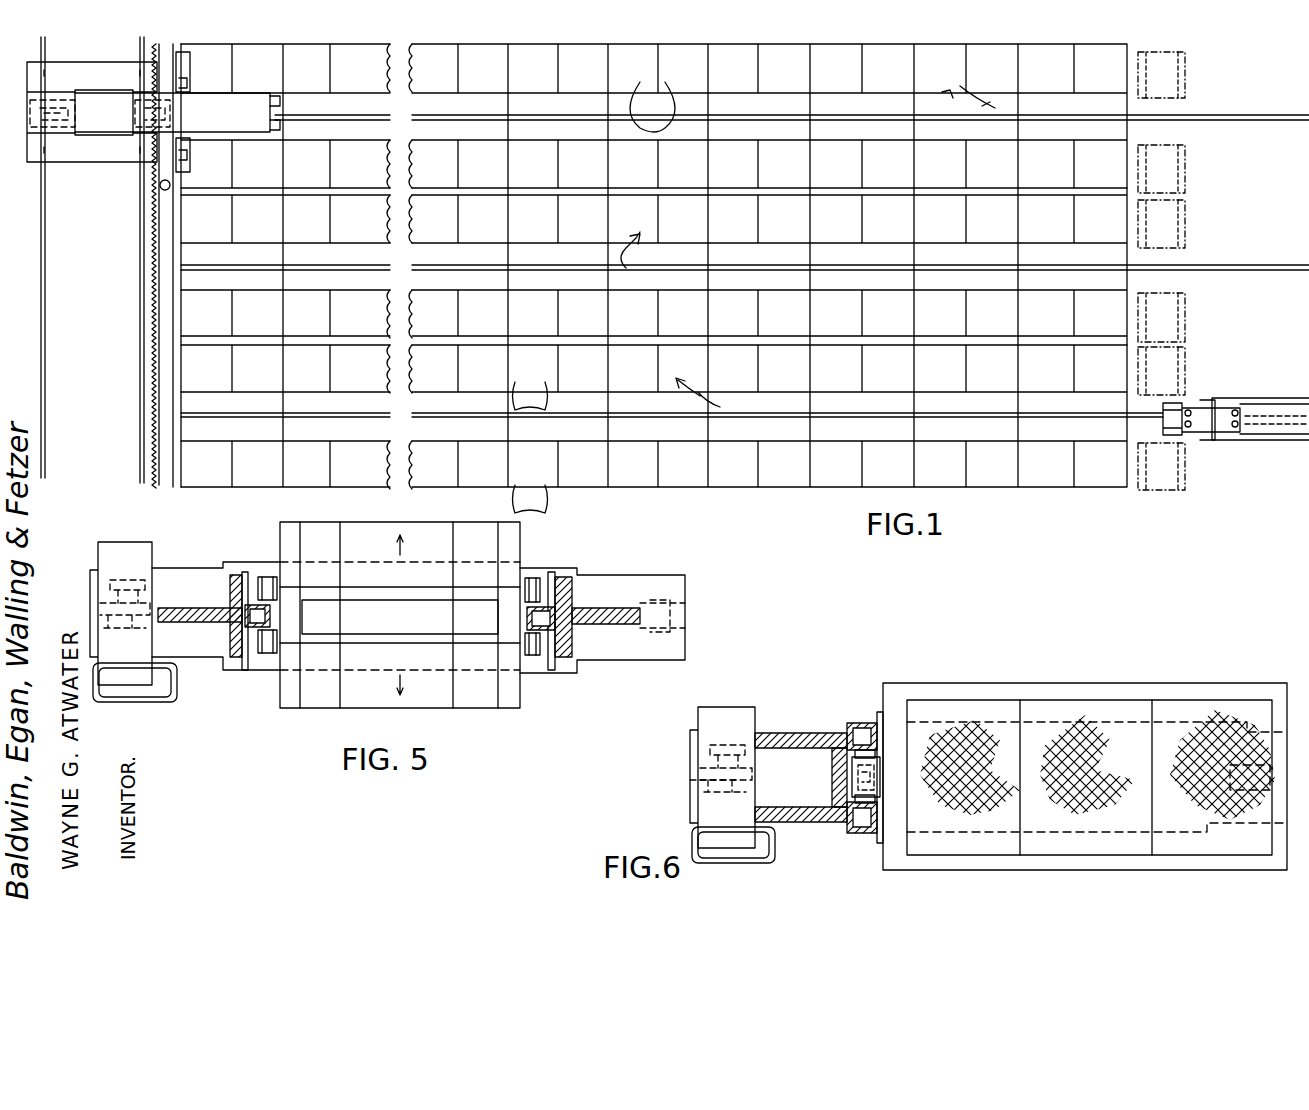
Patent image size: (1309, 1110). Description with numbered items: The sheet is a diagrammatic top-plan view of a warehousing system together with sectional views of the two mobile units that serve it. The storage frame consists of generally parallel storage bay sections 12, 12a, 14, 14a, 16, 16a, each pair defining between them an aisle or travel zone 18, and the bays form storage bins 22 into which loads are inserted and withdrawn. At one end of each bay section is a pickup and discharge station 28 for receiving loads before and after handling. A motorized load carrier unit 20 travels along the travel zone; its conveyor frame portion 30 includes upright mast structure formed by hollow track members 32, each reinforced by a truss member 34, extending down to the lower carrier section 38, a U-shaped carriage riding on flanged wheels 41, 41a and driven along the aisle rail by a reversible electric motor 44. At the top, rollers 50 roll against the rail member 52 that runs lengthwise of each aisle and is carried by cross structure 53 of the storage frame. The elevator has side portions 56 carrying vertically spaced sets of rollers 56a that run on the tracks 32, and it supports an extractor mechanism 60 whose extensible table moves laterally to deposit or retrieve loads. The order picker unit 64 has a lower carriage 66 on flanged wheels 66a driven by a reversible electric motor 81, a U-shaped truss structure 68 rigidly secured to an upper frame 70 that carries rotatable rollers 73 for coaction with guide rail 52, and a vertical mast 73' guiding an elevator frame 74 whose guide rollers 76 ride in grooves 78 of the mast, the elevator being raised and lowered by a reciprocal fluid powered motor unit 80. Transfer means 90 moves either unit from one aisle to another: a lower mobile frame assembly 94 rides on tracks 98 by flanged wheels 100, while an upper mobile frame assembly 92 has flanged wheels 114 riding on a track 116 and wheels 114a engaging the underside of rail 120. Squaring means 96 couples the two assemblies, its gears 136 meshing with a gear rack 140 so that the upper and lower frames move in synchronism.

In FIG. 1, the storage bay section 12 is at (694, 491).
In FIG. 1, the storage bay section 12a is at (718, 397).
In FIG. 1, the storage bay section 14 is at (717, 292).
In FIG. 1, the storage bay section 14a is at (643, 250).
In FIG. 1, the storage bay section 16 is at (979, 150).
In FIG. 1, the storage bay section 16a is at (1001, 101).
In FIG. 1, the aisle or travel zone 18 is at (1105, 128).
In FIG. 1, the load carrier unit 20 is at (105, 135).
In FIG. 5, the load carrier unit 20 is at (525, 700).
In FIG. 1, the storage bin 22 is at (594, 300).
In FIG. 1, the pickup and discharge station 28 is at (1185, 82).
In FIG. 5, the conveyor frame portion 30 is at (629, 582).
In FIG. 5, the track member 32 is at (246, 672).
In FIG. 5, the truss member 34 is at (205, 622).
In FIG. 5, the lower carrier section 38 is at (210, 566).
In FIG. 5, the flanged wheel 41 is at (135, 660).
In FIG. 5, the flanged wheel 41a is at (680, 614).
In FIG. 5, the electric motor 44 is at (152, 545).
In FIG. 5, the rollers / elevator 50 is at (330, 712).
In FIG. 1, the rail member 52 is at (842, 132).
In FIG. 1, the cross structure 53 is at (620, 132).
In FIG. 5, the side portion 56 is at (280, 538).
In FIG. 5, the rollers 56a is at (268, 655).
In FIG. 5, the extractor mechanism 60 is at (440, 700).
In FIG. 1, the order picker unit 64 is at (1238, 396).
In FIG. 6, the order picker unit 64 is at (1090, 685).
In FIG. 6, the lower carriage 66 is at (1120, 722).
In FIG. 6, the flanged wheel 66a is at (690, 780).
In FIG. 6, the truss structure 68 is at (790, 733).
In FIG. 1, the upper frame 70 is at (1222, 432).
In FIG. 1, the rotatable rollers 73 is at (1240, 422).
In FIG. 6, the vertical mast 73' is at (876, 766).
In FIG. 6, the elevator frame 74 is at (1208, 690).
In FIG. 6, the guide rollers 76 is at (862, 723).
In FIG. 6, the grooves 78 is at (858, 722).
In FIG. 6, the fluid powered motor unit 80 is at (885, 770).
In FIG. 6, the reversible electric motor 81 is at (745, 725).
In FIG. 1, the transfer means 90 is at (80, 160).
In FIG. 1, the upper mobile frame assembly 92 is at (230, 95).
In FIG. 1, the lower mobile frame assembly 94 is at (109, 36).
In FIG. 1, the squaring means 96 is at (156, 200).
In FIG. 1, the tracks 98 is at (45, 330).
In FIG. 1, the flanged wheels 100 is at (48, 70).
In FIG. 1, the flanged wheel 114 is at (185, 76).
In FIG. 1, the flanged wheel 114a is at (282, 100).
In FIG. 1, the track 116 is at (177, 380).
In FIG. 1, the rail or track member 120 is at (283, 325).
In FIG. 1, the gears 136 is at (170, 180).
In FIG. 1, the gear rack 140 is at (154, 345).